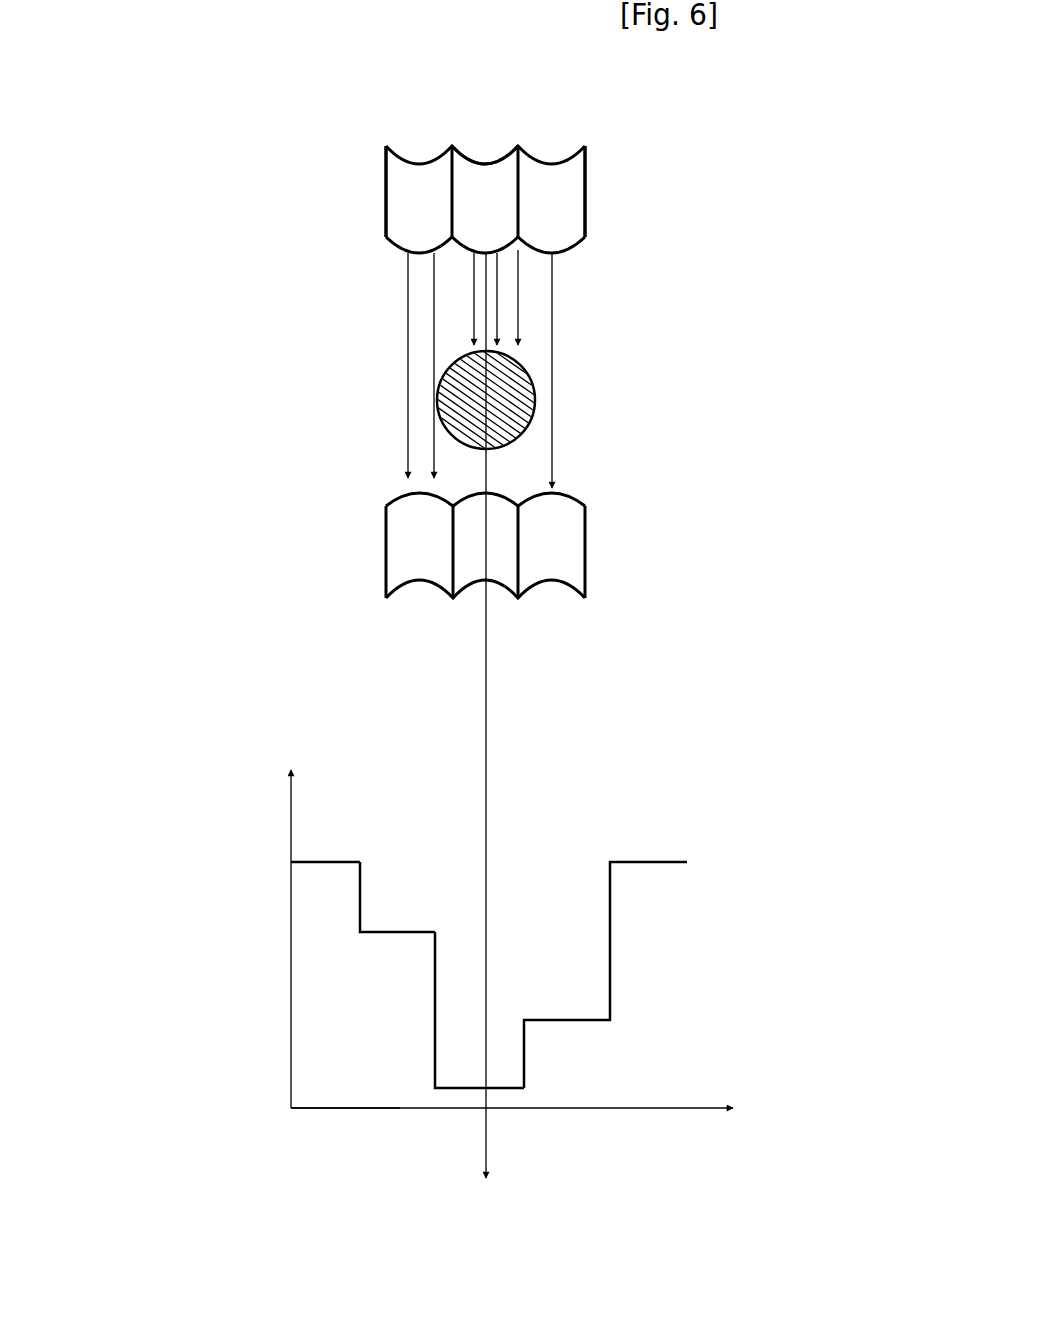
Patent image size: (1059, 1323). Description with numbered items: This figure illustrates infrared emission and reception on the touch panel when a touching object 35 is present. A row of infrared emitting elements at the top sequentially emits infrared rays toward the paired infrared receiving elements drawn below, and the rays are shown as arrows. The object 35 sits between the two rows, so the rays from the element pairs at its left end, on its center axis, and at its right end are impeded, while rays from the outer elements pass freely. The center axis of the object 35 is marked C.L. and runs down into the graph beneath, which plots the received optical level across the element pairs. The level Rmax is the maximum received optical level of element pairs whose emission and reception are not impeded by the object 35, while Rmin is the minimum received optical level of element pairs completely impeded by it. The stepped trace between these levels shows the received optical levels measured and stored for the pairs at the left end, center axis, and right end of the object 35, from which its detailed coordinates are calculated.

The object 35 is at (510, 395).
The center axis C.L. is at (494, 736).
The maximum received optical level Rmax is at (285, 862).
The minimum received optical level Rmin is at (305, 1101).